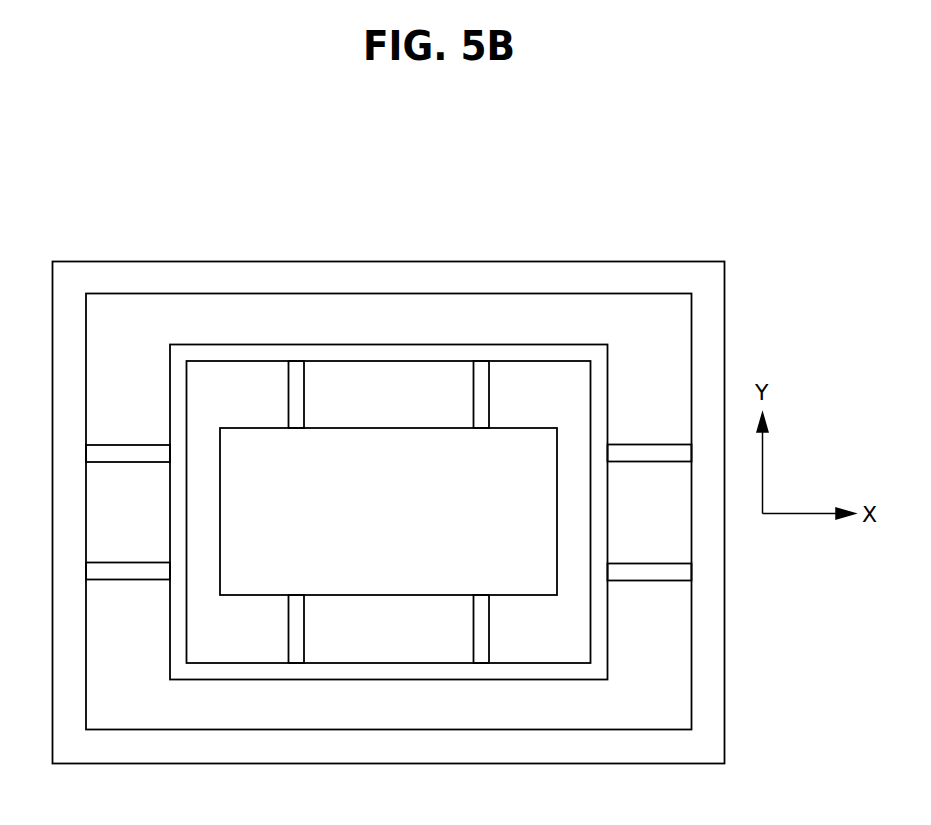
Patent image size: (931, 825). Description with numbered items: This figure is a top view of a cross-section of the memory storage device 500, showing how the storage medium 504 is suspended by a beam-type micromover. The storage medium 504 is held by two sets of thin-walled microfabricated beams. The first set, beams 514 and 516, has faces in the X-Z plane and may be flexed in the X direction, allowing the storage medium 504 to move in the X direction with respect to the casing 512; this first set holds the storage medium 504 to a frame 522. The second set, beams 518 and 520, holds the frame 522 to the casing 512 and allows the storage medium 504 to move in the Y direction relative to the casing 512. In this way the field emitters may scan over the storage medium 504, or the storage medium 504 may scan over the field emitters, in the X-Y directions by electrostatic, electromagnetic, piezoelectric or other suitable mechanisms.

The memory storage device 500 is at (138, 227).
The storage medium 504 is at (406, 523).
The casing 512 is at (708, 663).
The thin-walled microfabricated beam 514 is at (305, 408).
The thin-walled microfabricated beam 516 is at (490, 405).
The thin-walled microfabricated beam 518 is at (650, 444).
The thin-walled microfabricated beam 520 is at (650, 582).
The frame 522 is at (607, 378).